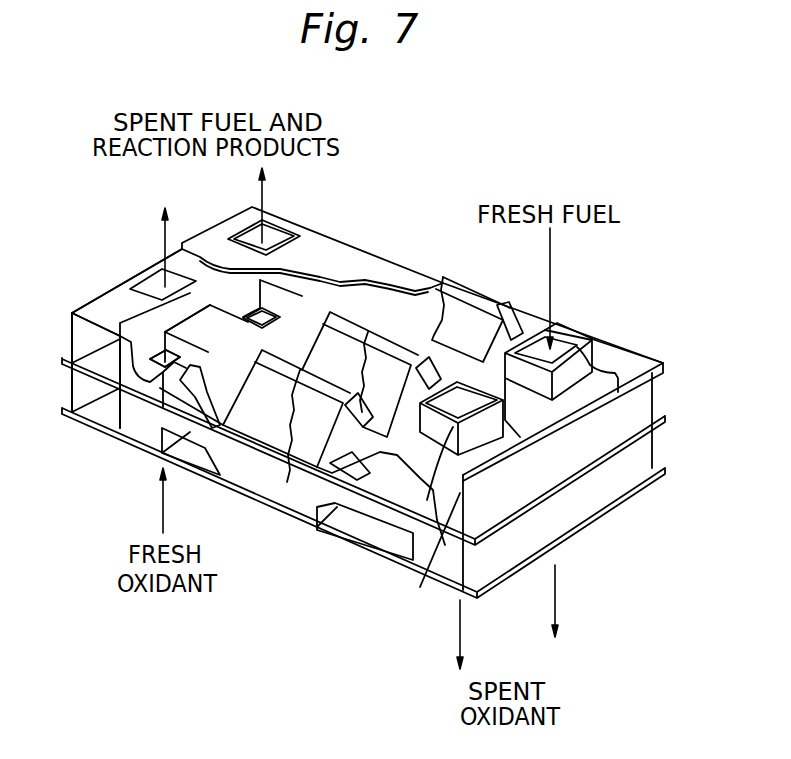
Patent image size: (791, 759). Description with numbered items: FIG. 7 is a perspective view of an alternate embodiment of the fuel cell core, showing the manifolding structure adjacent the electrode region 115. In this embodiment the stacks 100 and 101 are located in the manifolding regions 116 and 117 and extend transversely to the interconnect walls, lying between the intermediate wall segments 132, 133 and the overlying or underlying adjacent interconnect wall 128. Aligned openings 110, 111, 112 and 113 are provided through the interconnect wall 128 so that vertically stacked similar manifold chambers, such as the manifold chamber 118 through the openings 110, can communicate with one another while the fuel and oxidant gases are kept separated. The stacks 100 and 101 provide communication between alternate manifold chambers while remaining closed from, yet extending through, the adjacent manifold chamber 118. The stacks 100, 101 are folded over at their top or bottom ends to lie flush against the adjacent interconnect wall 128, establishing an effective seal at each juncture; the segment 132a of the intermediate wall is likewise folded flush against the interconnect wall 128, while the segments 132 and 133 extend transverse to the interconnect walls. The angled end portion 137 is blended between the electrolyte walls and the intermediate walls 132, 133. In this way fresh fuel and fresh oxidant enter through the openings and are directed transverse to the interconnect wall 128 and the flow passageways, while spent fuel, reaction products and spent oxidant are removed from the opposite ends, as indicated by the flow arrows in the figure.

The stack 100 is at (280, 296).
The stack 101 is at (510, 412).
The opening 110 is at (282, 232).
The opening 111 is at (568, 330).
The opening 112 is at (152, 375).
The opening 113 is at (458, 480).
The electrode region 115 is at (240, 495).
The manifolding region 116 is at (93, 428).
The manifolding region 117 is at (377, 555).
The manifold chamber 118 is at (95, 340).
The interconnect wall 128 is at (208, 250).
The intermediate wall segment 132 is at (211, 334).
The intermediate wall segment 132a is at (114, 303).
The intermediate wall segment 133 is at (377, 439).
The angled end portion 137 is at (522, 313).